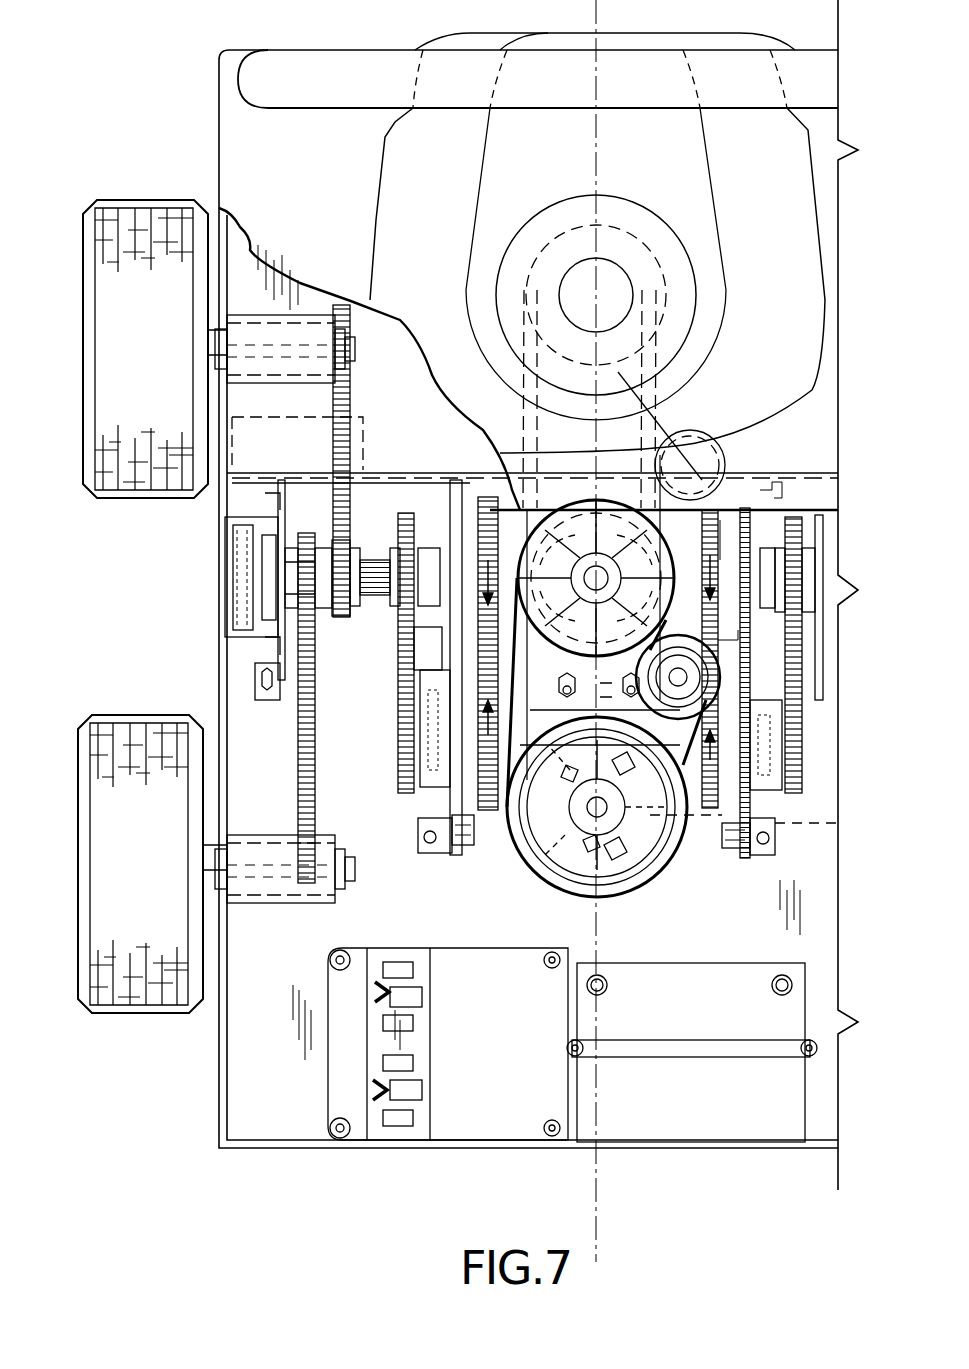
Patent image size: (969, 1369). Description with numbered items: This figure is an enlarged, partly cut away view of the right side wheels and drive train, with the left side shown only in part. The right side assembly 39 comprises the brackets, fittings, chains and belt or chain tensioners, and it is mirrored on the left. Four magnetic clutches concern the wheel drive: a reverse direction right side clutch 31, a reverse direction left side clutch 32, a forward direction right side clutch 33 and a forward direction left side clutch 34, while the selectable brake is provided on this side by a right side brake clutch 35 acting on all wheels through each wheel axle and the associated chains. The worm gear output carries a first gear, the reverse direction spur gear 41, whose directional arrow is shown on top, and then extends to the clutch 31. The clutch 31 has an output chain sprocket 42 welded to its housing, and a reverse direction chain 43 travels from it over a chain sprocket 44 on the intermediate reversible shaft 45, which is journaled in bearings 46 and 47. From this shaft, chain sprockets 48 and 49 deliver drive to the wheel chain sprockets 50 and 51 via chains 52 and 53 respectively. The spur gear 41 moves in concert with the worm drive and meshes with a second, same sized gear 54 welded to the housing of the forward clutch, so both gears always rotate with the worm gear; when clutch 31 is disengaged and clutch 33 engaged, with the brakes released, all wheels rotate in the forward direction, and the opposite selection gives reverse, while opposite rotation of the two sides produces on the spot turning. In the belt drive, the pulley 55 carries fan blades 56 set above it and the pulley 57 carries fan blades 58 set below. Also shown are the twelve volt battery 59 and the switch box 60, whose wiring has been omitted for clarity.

The reverse direction right side clutch 31 is at (430, 812).
The reverse direction left side clutch 32 is at (760, 750).
The forward direction right side clutch 33 is at (520, 545).
The forward direction left side clutch 34 is at (735, 510).
The right side brake clutch 35 is at (248, 588).
The right side assembly 39 is at (267, 990).
The reverse direction spur gear 41 is at (490, 820).
The output chain sprocket 42 is at (395, 728).
The reverse direction chain 43 is at (405, 660).
The chain sprocket 44 is at (345, 600).
The intermediate reversible shaft 45 is at (375, 560).
The bearing 46 is at (412, 595).
The bearing 47 is at (280, 565).
The chain sprocket 48 is at (340, 560).
The chain sprocket 49 is at (335, 548).
The wheel chain sprocket 50 is at (195, 624).
The wheel chain sprocket 51 is at (333, 330).
The chain 52 is at (315, 800).
The chain 53 is at (342, 398).
The same sized gear 54 is at (491, 497).
The pulley 55 is at (735, 575).
The fan blades 56 is at (660, 600).
The pulley 57 is at (650, 855).
The fan blades 58 is at (645, 815).
The 12V battery 59 is at (692, 1052).
The switch box 60 is at (448, 1044).